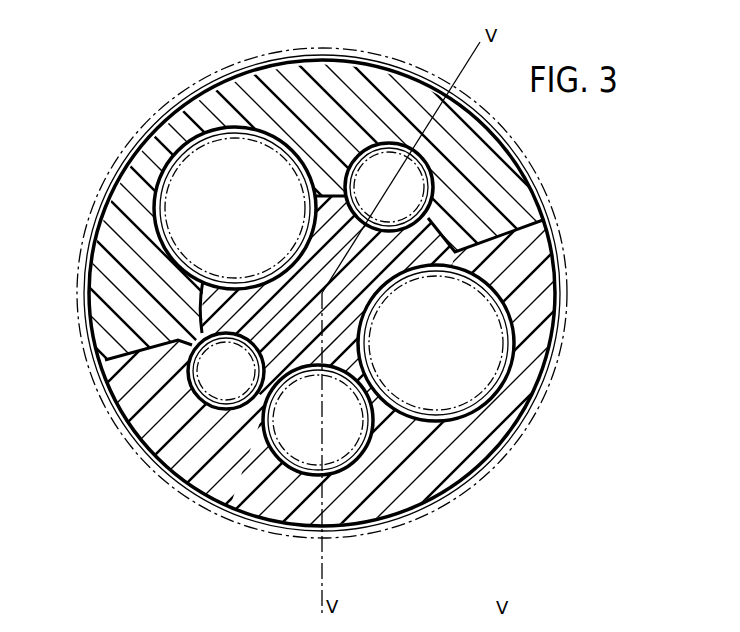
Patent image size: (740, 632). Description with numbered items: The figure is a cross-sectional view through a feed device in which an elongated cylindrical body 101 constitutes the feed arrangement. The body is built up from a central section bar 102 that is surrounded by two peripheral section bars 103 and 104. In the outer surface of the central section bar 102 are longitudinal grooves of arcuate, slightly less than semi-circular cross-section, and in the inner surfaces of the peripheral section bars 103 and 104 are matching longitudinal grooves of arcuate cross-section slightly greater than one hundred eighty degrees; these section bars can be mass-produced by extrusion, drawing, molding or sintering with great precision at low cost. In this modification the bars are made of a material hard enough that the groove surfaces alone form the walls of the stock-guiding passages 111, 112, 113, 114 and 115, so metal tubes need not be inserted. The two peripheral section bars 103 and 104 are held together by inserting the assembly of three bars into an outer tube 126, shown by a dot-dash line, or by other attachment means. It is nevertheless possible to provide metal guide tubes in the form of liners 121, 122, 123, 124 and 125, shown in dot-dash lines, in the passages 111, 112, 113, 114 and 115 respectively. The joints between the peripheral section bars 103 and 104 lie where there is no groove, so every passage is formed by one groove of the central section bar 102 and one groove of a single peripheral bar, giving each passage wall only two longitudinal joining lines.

The elongated cylindrical body 101 is at (352, 58).
The central section bar 102 is at (213, 312).
The peripheral section bar 103 is at (160, 143).
The peripheral section bar 104 is at (148, 420).
The stock-guiding passage 111 is at (198, 398).
The stock-guiding passage 112 is at (425, 190).
The stock-guiding passage 113 is at (290, 448).
The stock-guiding passage 114 is at (488, 369).
The stock-guiding passage 115 is at (212, 152).
The liner 121 is at (205, 385).
The liner 122 is at (432, 214).
The liner 123 is at (347, 470).
The liner 124 is at (511, 318).
The liner 125 is at (272, 130).
The outer tube 126 is at (412, 72).